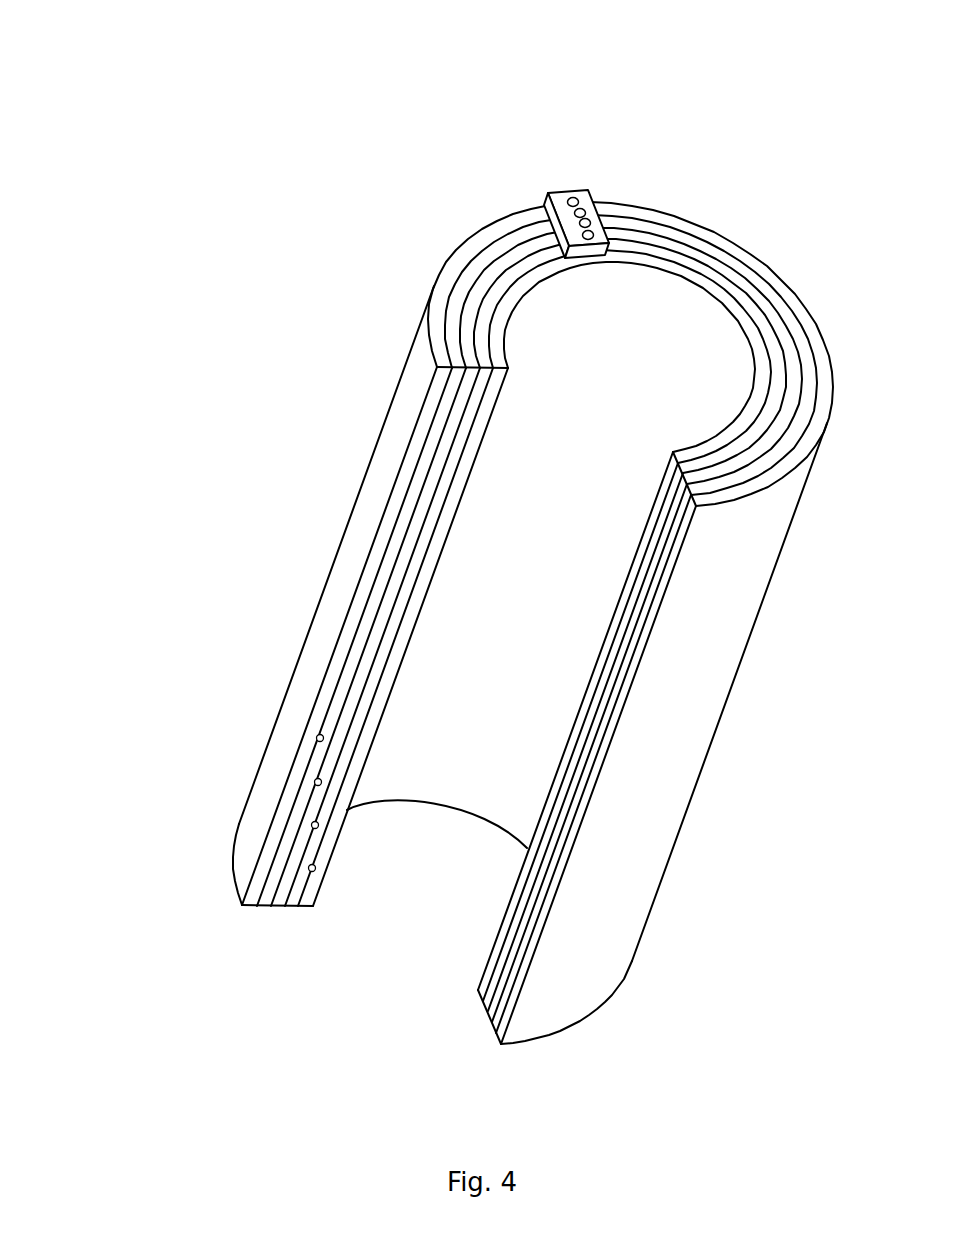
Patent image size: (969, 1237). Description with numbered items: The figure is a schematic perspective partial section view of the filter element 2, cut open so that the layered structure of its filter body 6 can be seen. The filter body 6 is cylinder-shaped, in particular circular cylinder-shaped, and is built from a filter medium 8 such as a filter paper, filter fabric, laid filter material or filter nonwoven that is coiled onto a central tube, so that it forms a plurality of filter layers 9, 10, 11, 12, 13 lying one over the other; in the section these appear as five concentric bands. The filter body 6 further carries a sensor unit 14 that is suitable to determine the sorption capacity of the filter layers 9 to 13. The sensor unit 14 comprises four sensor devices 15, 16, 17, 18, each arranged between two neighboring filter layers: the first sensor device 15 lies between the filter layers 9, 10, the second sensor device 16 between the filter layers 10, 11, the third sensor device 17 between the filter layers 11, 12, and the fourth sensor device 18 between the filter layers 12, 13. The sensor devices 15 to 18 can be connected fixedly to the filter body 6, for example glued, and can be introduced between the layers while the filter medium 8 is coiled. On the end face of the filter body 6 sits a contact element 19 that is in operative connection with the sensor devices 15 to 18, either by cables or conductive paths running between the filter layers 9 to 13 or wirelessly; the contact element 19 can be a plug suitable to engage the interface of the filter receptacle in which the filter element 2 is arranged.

The filter element 2 is at (516, 74).
The filter body 6 is at (731, 238).
The filter medium 8 is at (253, 330).
The filter layer 9 is at (428, 565).
The filter layer 10 is at (433, 522).
The filter layer 11 is at (437, 475).
The filter layer 12 is at (437, 436).
The filter layer 13 is at (437, 396).
The sensor unit 14 is at (130, 661).
The first sensor device 15 is at (308, 868).
The second sensor device 16 is at (311, 825).
The third sensor device 17 is at (314, 782).
The fourth sensor device 18 is at (316, 738).
The contact element 19 is at (578, 192).